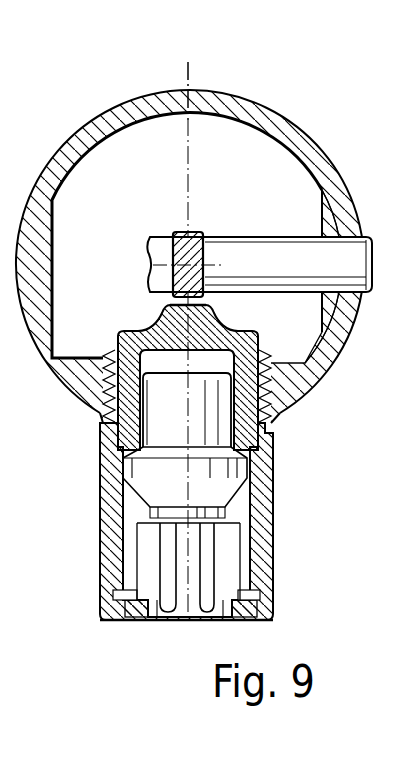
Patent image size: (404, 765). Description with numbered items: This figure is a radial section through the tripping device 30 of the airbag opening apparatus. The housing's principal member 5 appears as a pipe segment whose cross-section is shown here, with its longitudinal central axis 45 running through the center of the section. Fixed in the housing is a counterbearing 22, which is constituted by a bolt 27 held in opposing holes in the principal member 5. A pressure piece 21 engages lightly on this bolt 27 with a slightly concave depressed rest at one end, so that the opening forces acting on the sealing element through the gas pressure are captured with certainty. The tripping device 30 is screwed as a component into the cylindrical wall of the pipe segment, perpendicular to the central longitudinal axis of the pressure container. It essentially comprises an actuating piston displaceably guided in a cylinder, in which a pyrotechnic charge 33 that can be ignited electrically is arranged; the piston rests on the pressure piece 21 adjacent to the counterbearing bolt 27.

The principal member 5 is at (262, 118).
The pressure piece 21 is at (198, 231).
The counterbearing 22 is at (372, 236).
The bolt 27 is at (333, 347).
The tripping device 30 is at (253, 526).
The pyrotechnic charge 33 is at (212, 423).
The longitudinal central axis 45 is at (200, 72).